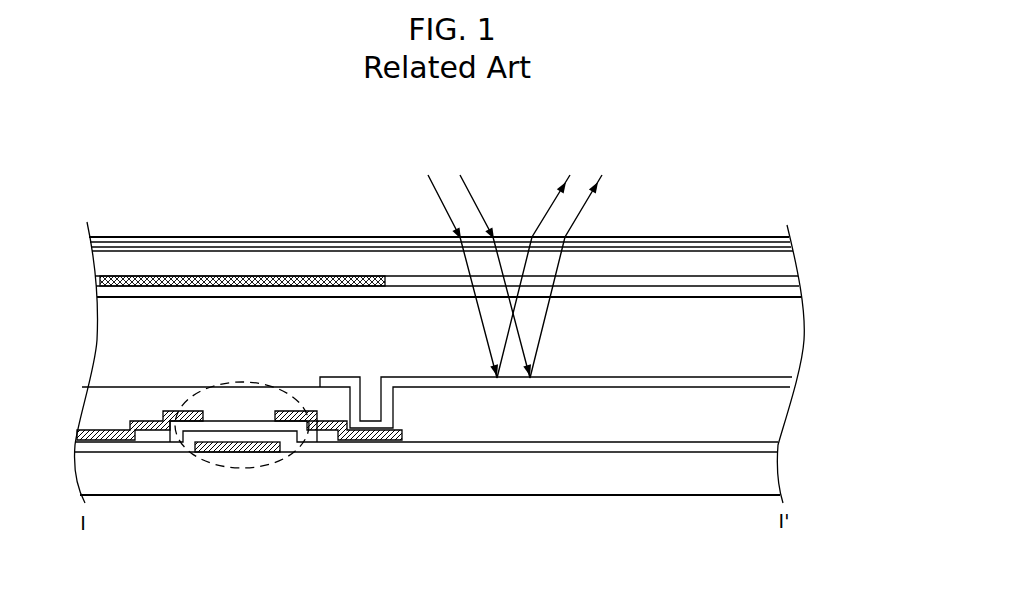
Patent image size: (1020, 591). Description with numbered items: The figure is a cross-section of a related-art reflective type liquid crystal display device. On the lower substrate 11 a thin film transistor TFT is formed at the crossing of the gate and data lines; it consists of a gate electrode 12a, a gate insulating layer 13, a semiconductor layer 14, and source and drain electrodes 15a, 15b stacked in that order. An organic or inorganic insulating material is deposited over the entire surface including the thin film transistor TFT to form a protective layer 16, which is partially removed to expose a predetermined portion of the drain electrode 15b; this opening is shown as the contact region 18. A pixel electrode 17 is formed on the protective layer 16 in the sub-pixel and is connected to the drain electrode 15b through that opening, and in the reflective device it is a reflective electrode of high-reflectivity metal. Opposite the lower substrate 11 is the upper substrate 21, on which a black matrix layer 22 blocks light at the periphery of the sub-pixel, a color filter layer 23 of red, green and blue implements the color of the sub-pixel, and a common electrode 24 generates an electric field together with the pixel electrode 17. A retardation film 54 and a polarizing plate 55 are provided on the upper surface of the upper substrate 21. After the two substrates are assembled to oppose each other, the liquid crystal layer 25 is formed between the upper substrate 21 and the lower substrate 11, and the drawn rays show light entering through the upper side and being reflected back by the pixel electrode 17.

The lower substrate 11 is at (776, 476).
The gate electrode 12a is at (223, 441).
The gate insulating layer 13 is at (776, 444).
The semiconductor layer 14 is at (260, 420).
The source electrode 15a is at (147, 410).
The drain electrode 15b is at (344, 418).
The protective layer 16 is at (723, 397).
The pixel electrode 17 is at (655, 377).
The contact hole 18 is at (375, 393).
The upper substrate 21 is at (797, 253).
The black matrix layer 22 is at (307, 275).
The color filter layer 23 is at (799, 282).
The common electrode 24 is at (797, 297).
The liquid crystal layer 25 is at (797, 343).
The retardation film 54 is at (751, 236).
The polarizing plate 55 is at (694, 236).
The thin film transistor TFT is at (207, 466).